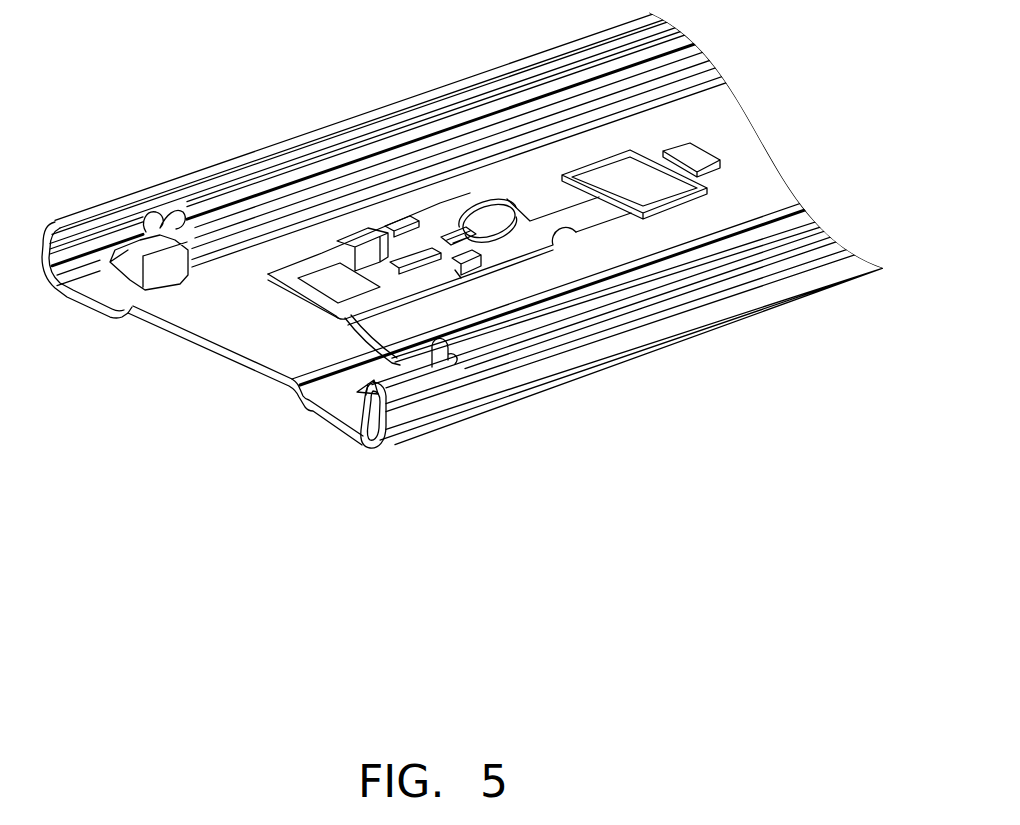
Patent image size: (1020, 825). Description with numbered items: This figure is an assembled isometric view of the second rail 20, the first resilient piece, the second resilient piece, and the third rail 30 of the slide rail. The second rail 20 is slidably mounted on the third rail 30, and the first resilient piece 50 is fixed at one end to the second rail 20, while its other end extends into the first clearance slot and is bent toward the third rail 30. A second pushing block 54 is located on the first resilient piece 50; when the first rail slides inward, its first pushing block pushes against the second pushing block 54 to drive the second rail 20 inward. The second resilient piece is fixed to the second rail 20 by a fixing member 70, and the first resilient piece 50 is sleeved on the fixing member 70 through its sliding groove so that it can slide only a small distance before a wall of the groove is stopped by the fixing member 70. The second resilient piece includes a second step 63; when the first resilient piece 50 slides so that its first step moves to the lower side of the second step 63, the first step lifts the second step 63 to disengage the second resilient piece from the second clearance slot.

The second rail 20 is at (208, 210).
The third rail 30 is at (265, 350).
The first resilient piece 50 is at (290, 274).
The second pushing block 54 is at (483, 265).
The second step 63 is at (365, 236).
The fixing member 70 is at (487, 220).